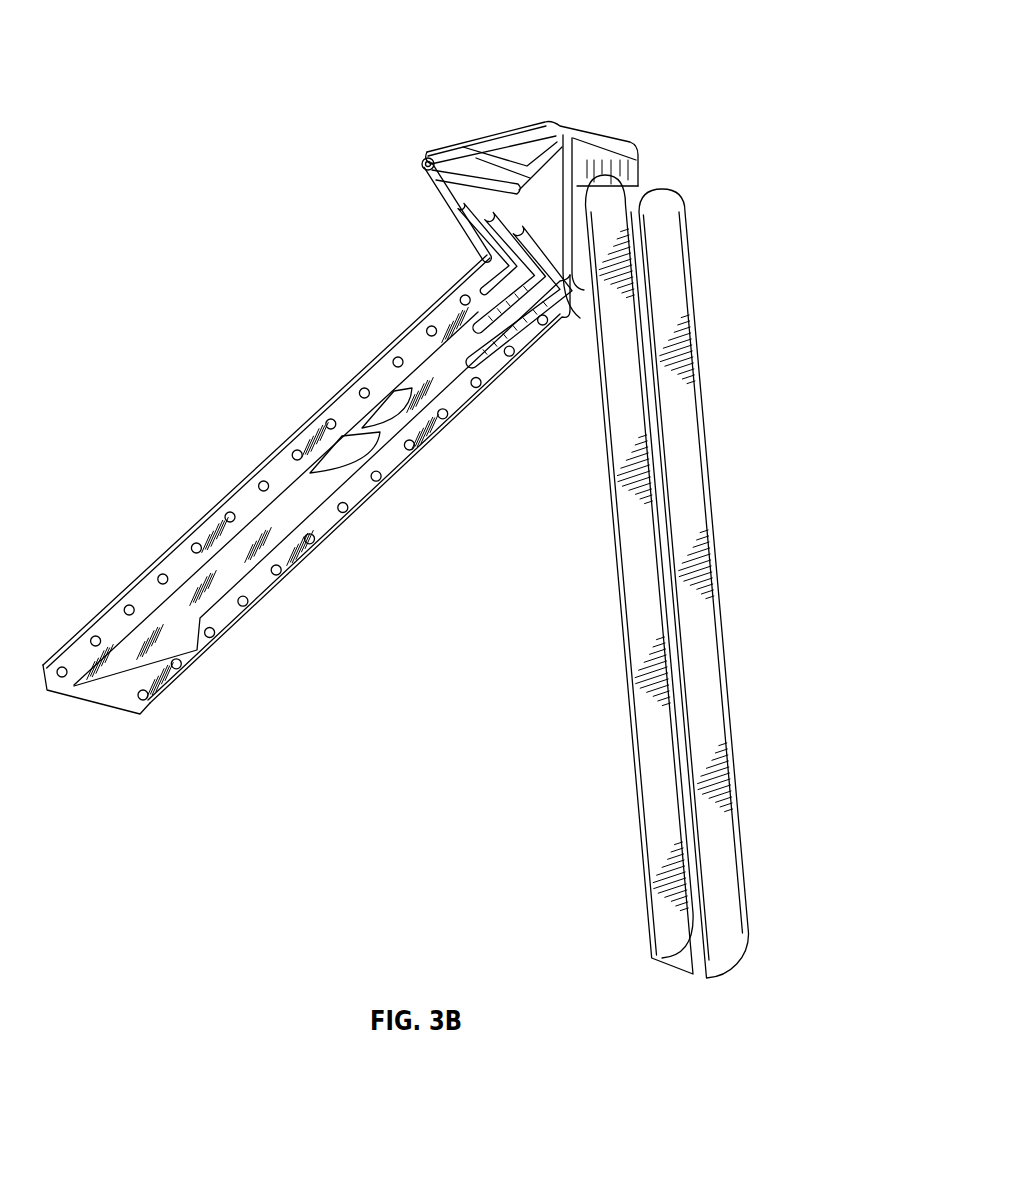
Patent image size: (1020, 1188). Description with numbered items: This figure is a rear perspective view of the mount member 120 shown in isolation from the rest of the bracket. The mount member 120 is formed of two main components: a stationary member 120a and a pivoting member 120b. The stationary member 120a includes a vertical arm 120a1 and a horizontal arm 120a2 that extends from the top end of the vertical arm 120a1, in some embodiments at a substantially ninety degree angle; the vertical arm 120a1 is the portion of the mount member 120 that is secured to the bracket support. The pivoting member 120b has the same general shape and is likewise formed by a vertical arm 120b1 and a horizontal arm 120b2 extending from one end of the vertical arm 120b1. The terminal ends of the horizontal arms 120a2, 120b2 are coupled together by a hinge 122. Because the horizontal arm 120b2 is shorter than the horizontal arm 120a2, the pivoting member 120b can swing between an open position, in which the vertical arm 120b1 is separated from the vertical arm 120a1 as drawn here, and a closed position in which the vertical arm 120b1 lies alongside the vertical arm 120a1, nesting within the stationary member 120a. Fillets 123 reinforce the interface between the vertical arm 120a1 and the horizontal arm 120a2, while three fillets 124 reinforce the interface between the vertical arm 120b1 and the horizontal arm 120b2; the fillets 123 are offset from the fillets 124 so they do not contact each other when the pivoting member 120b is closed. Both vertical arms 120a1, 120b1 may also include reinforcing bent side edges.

The mount member 120 is at (709, 49).
The stationary member 120a is at (758, 720).
The vertical arm 120a1 is at (686, 452).
The horizontal arm 120a2 is at (467, 136).
The pivoting member 120b is at (195, 406).
The vertical arm 120b1 is at (259, 590).
The horizontal arm 120b2 is at (436, 191).
The hinge 122 is at (423, 164).
The fillets 123 is at (560, 127).
The fillets 124 is at (471, 276).